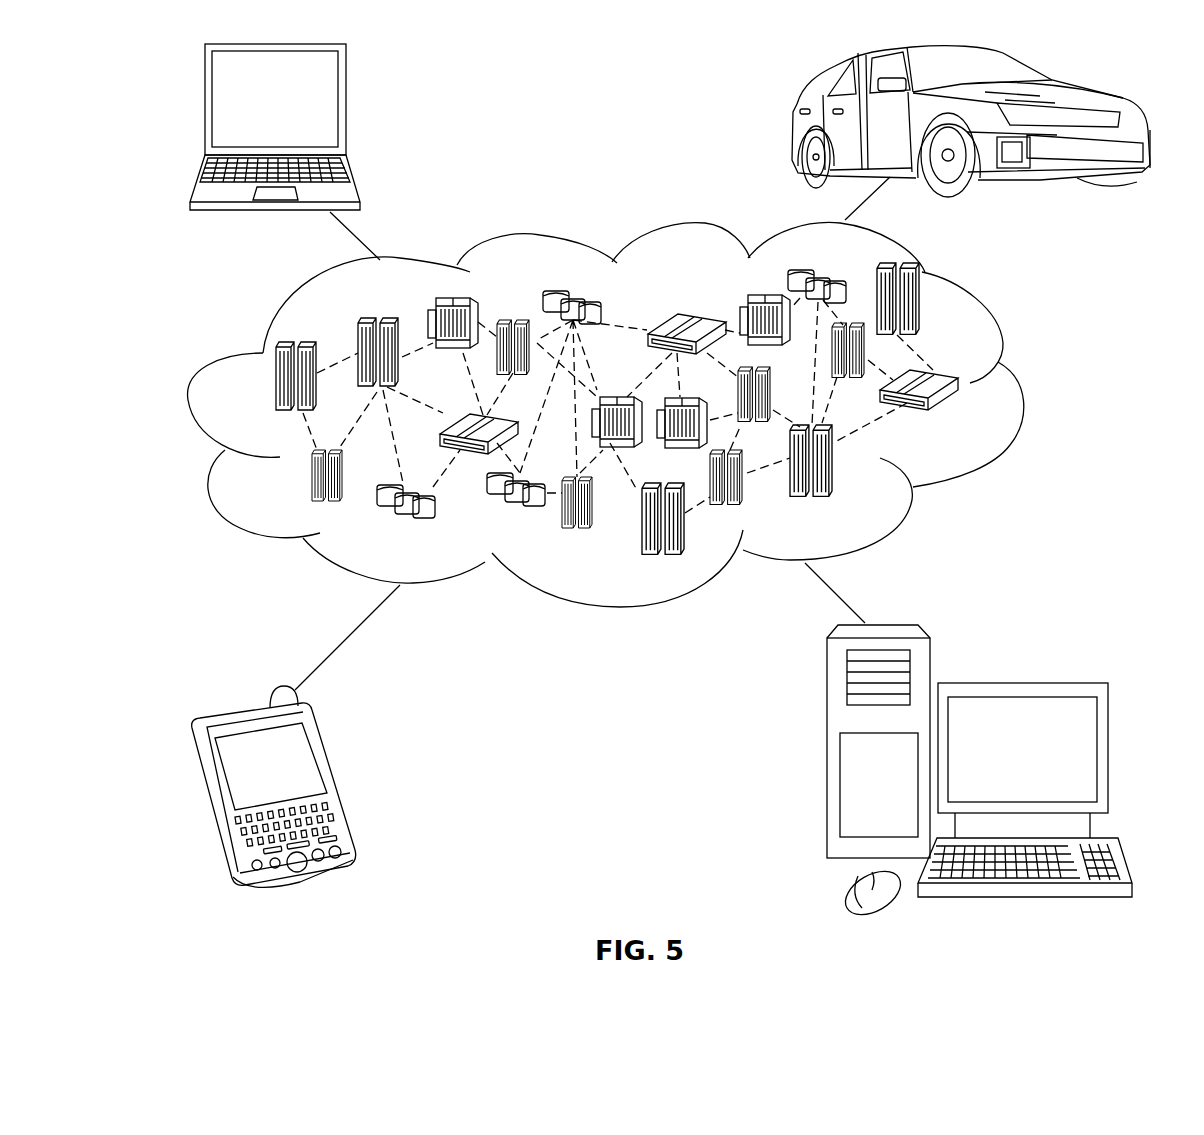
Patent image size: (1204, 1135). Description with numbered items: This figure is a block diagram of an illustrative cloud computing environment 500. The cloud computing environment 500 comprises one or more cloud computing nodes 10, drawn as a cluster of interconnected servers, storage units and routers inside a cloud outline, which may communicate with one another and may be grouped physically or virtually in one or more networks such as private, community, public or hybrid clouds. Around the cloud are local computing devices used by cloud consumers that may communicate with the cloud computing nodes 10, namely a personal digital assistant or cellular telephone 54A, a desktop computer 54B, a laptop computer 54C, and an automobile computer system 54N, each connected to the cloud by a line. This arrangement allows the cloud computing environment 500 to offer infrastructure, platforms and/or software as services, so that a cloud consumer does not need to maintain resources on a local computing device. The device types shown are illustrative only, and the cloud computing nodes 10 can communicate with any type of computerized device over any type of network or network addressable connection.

The cloud computing environment 500 is at (1022, 383).
The cloud computing nodes 10 is at (962, 418).
The personal digital assistant or cellular telephone 54A is at (335, 780).
The desktop computer 54B is at (1018, 682).
The laptop computer 54C is at (346, 106).
The automobile computer system 54N is at (795, 123).